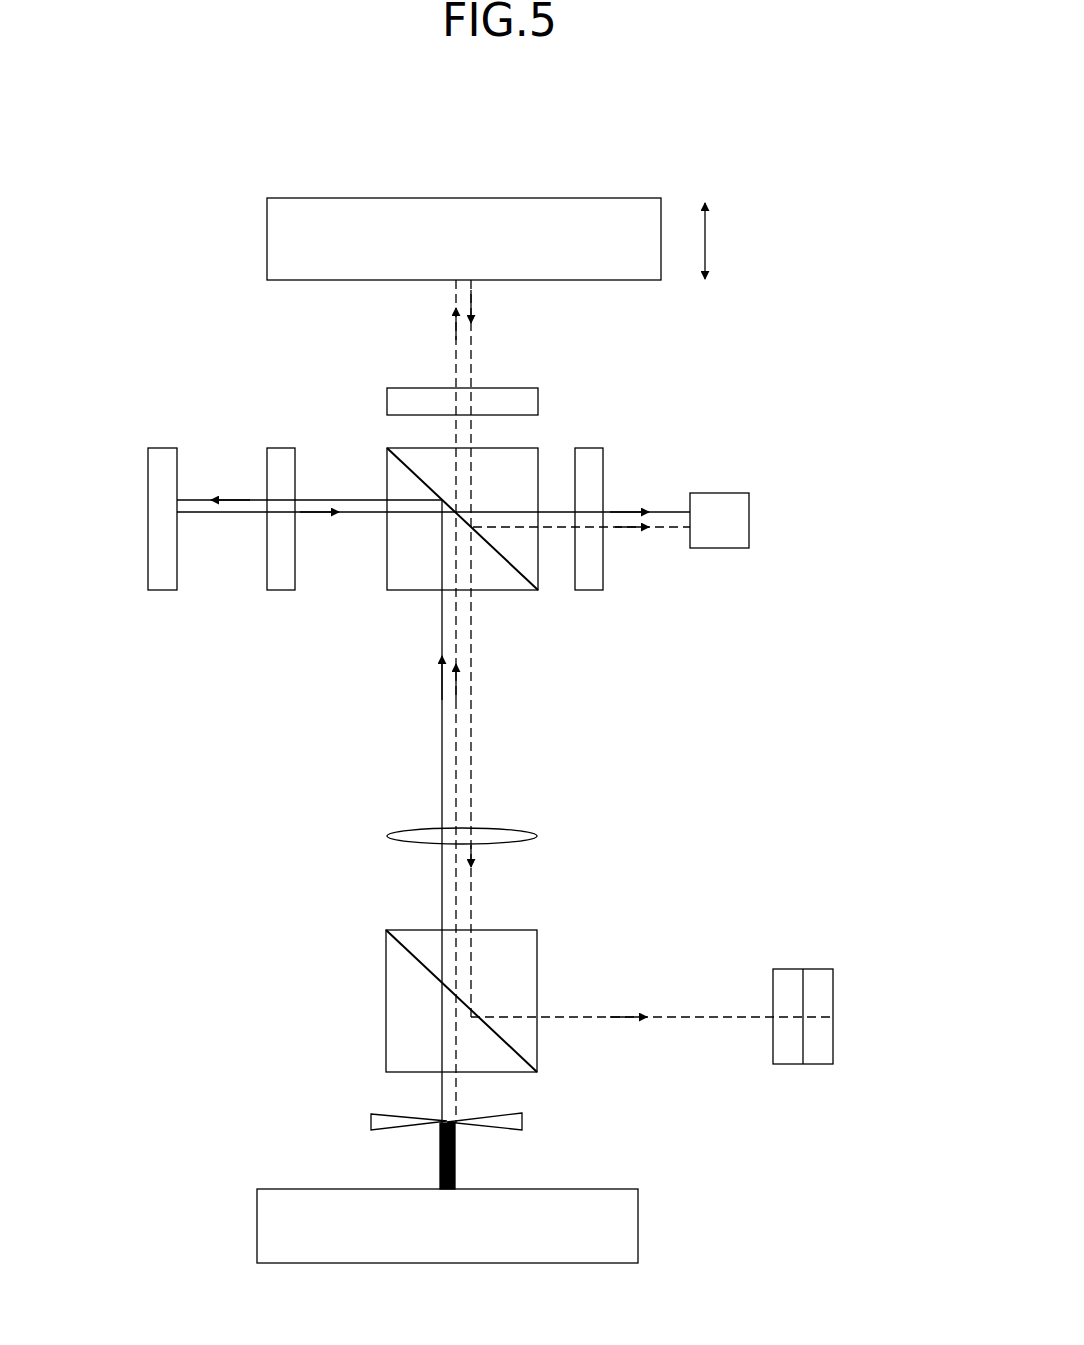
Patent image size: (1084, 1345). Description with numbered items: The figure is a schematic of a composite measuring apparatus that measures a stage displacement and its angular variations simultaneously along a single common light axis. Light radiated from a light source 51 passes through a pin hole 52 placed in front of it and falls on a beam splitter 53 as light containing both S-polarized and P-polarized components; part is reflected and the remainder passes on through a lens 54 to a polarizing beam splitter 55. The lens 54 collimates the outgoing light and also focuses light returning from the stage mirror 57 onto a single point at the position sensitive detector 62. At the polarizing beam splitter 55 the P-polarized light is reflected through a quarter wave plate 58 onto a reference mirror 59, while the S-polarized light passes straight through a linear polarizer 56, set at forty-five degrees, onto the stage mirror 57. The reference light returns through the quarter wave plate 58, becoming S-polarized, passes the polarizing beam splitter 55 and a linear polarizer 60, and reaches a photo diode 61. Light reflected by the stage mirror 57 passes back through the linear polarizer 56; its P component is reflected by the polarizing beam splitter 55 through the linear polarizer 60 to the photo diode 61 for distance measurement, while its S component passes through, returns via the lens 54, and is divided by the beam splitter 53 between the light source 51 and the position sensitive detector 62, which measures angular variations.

The light source 51 is at (638, 1226).
The pin hole 52 is at (371, 1120).
The beam splitter 53 is at (537, 963).
The lens 54 is at (537, 836).
The polarizing beam splitter 55 is at (387, 477).
The linear polarizer 56 is at (538, 403).
The stage mirror 57 is at (530, 198).
The quarter wave plate 58 is at (280, 590).
The reference mirror 59 is at (157, 590).
The linear polarizer 60 is at (590, 448).
The photo diode 61 is at (749, 515).
The position sensitive detector 62 is at (833, 1017).